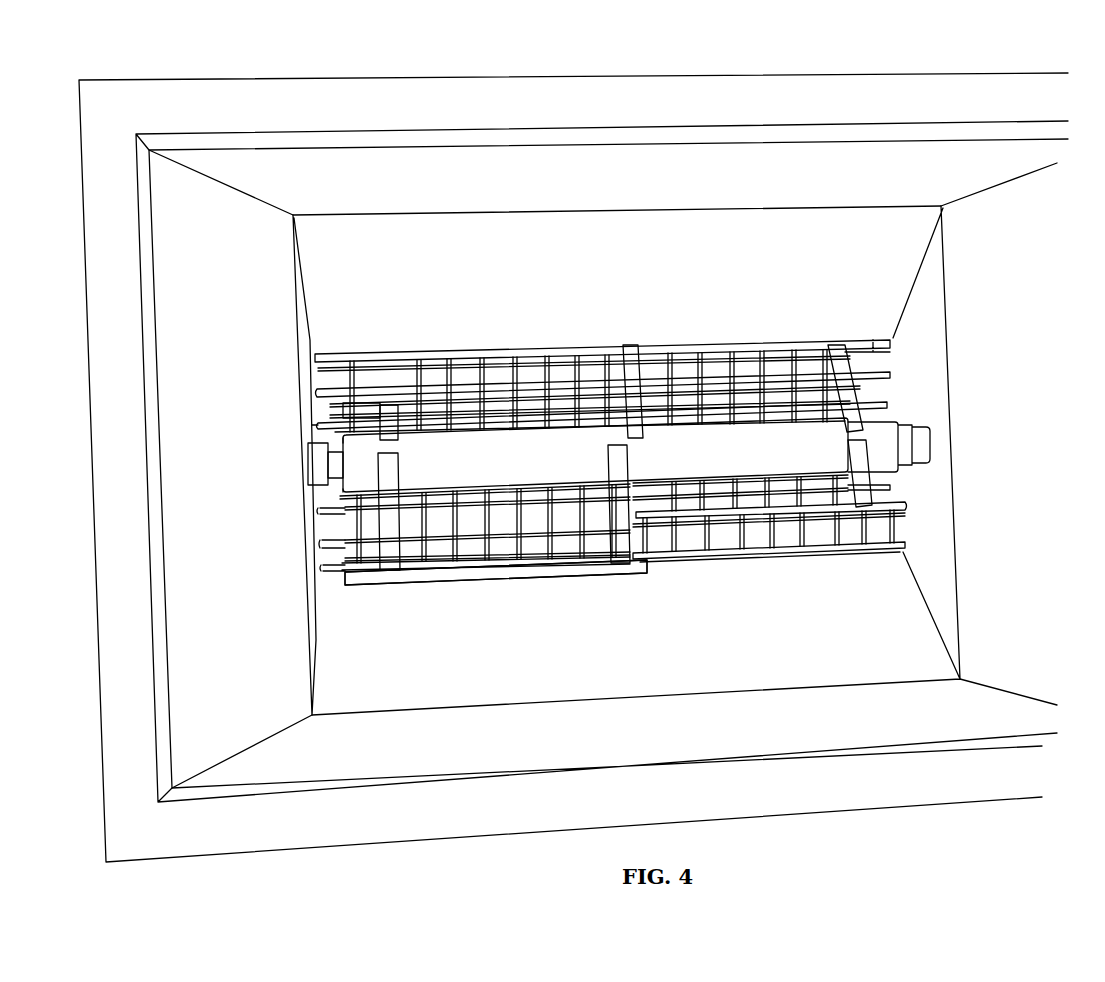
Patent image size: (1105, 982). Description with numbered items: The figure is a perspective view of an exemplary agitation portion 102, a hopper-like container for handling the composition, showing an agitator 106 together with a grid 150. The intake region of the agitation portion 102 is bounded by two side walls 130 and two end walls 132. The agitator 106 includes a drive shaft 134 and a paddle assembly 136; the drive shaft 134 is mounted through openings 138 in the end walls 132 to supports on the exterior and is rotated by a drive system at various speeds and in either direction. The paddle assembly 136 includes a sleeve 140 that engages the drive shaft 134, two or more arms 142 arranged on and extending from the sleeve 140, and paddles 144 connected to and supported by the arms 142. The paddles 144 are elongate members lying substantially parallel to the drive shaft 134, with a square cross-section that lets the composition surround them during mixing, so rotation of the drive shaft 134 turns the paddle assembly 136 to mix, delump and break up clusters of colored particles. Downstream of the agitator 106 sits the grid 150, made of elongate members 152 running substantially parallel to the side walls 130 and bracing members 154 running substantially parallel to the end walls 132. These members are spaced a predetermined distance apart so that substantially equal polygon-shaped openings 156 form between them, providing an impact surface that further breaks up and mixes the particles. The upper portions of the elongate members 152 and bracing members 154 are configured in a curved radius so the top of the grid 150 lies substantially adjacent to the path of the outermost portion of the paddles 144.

The agitation portion 102 is at (634, 93).
The agitator 106 is at (329, 138).
The side walls 130 is at (600, 280).
The end walls 132 is at (238, 442).
The drive shaft 134 is at (325, 488).
The paddle assembly 136 is at (311, 420).
The openings 138 is at (306, 473).
The sleeve 140 is at (476, 472).
The arms 142 is at (395, 410).
The paddles 144 is at (362, 408).
The grid 150 is at (306, 362).
The elongate members 152 is at (353, 557).
The bracing members 154 is at (352, 520).
The openings 156 is at (373, 530).